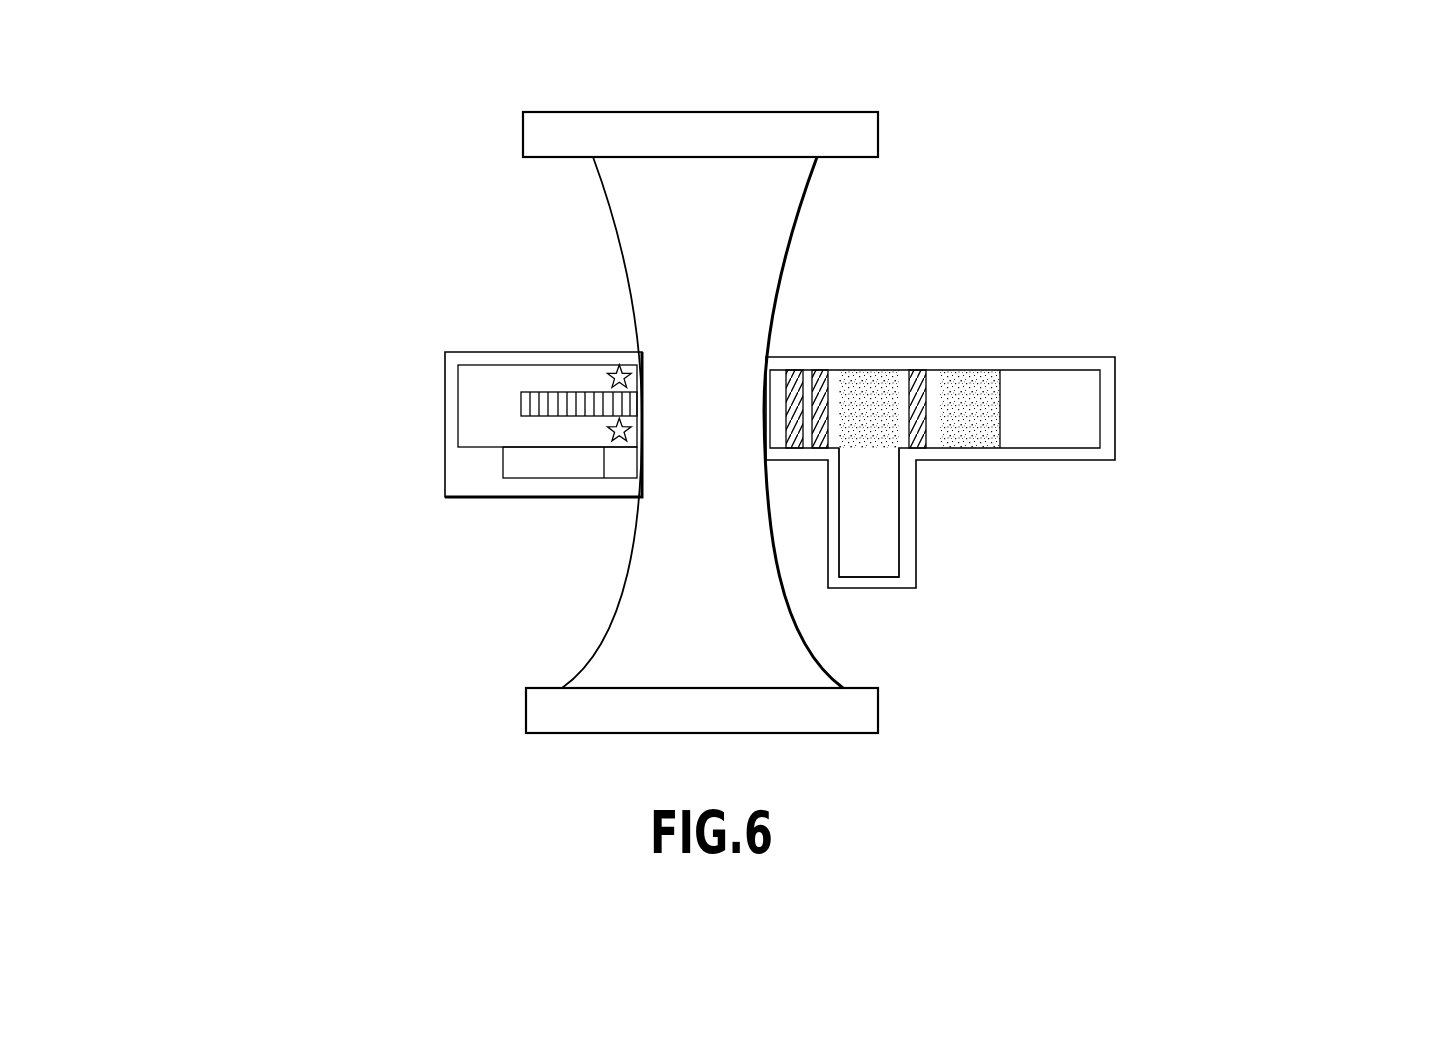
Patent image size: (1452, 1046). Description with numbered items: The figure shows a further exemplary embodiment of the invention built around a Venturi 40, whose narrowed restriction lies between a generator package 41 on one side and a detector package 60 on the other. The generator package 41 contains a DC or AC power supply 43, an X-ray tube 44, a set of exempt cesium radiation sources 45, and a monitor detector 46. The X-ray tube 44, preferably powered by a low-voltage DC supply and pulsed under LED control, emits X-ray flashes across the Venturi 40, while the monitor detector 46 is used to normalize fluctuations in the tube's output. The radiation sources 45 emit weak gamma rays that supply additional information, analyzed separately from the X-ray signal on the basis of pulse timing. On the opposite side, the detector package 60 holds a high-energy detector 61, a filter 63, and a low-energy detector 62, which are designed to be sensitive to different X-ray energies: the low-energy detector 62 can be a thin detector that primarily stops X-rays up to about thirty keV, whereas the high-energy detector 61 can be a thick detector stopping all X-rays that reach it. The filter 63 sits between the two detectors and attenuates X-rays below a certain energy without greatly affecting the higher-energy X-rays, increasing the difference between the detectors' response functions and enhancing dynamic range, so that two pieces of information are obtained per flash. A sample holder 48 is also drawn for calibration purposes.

The Venturi 40 is at (783, 257).
The generator package 41 is at (555, 352).
The DC or AC power supply 43 is at (521, 402).
The X-ray tube 44 is at (521, 402).
The radiation source 45 is at (612, 386).
The monitor detector 46 is at (503, 462).
The sample holder (for calibration purposes) 48 is at (805, 450).
The detector package 60 is at (860, 357).
The high-energy detector 61 is at (1015, 357).
The low-energy detector 62 is at (865, 450).
The filter 63 is at (917, 450).